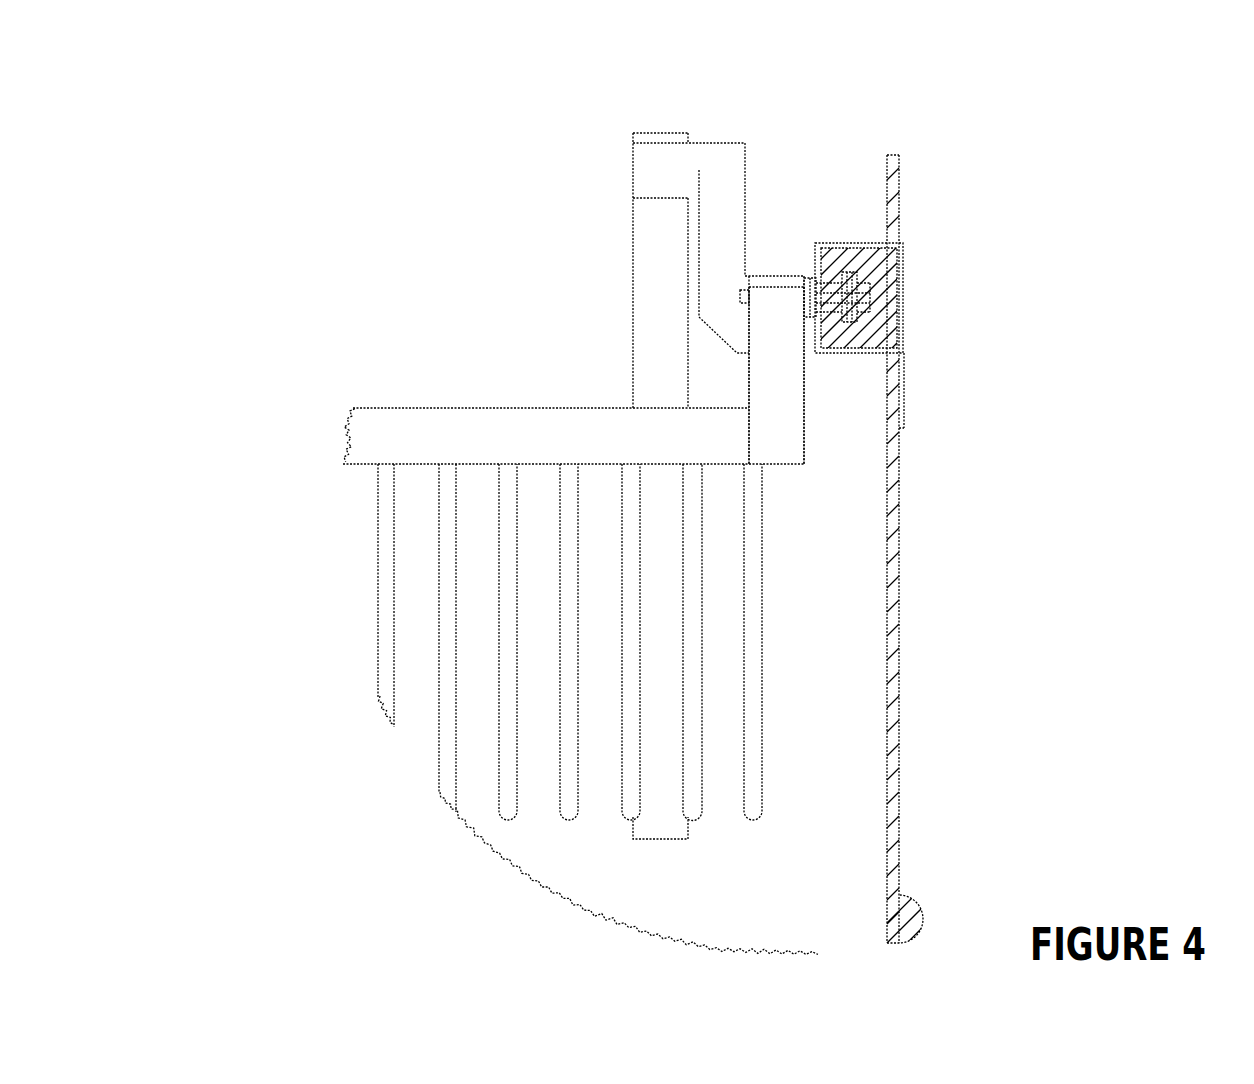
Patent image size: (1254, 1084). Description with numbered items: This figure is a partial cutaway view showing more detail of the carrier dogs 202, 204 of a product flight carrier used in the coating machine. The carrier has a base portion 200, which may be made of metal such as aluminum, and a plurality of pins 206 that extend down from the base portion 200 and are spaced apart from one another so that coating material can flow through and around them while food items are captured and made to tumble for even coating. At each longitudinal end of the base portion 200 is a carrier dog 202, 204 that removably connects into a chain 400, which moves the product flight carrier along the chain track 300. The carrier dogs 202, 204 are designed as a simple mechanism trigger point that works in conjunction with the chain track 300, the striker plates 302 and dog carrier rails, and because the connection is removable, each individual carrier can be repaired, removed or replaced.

The base portion 200 is at (420, 437).
The pins 206 is at (748, 750).
The carrier dog 202 is at (745, 141).
The carrier dog 204 is at (746, 134).
The chain track 300 is at (849, 243).
The striker plate 302 is at (633, 307).
The chain 400 is at (903, 268).